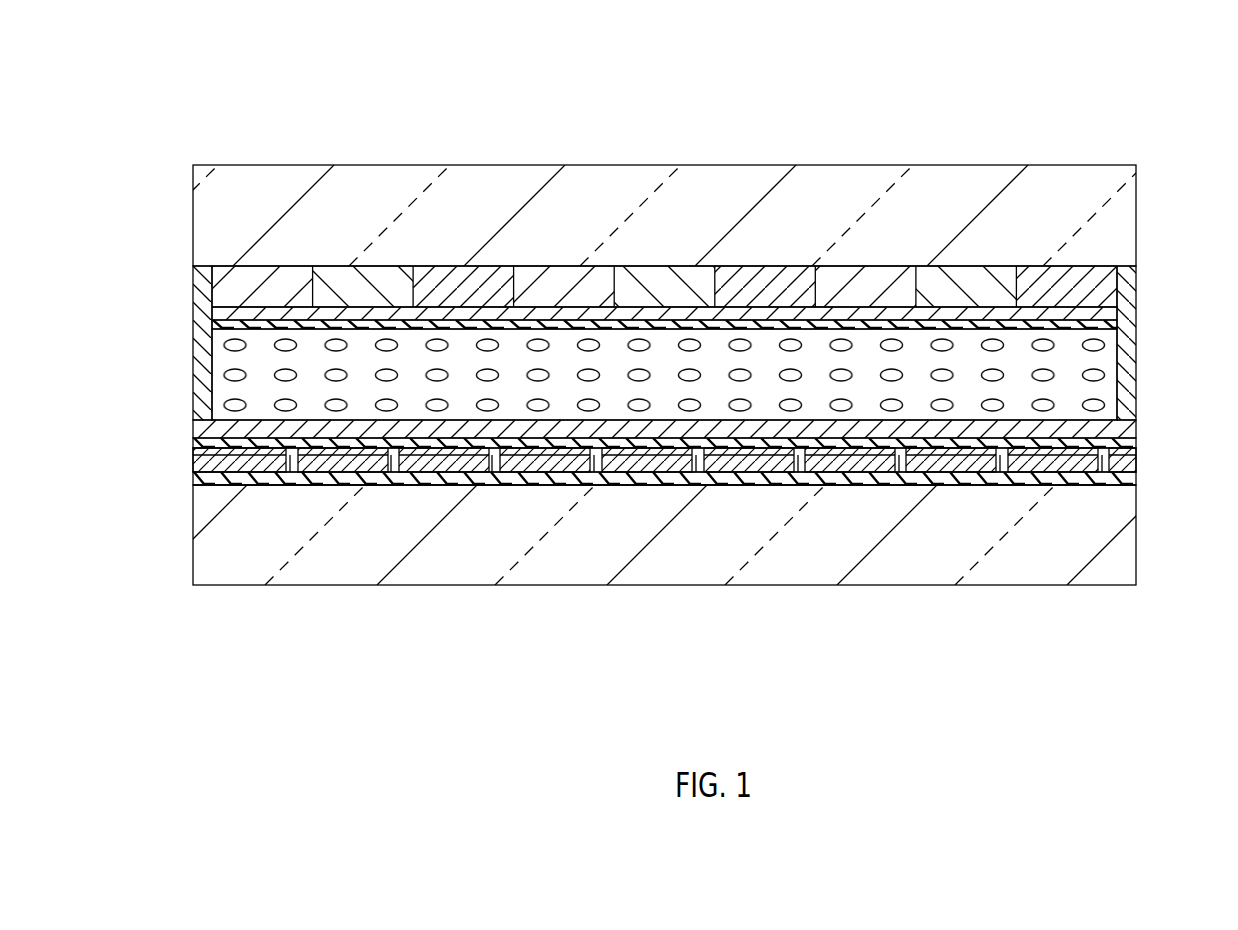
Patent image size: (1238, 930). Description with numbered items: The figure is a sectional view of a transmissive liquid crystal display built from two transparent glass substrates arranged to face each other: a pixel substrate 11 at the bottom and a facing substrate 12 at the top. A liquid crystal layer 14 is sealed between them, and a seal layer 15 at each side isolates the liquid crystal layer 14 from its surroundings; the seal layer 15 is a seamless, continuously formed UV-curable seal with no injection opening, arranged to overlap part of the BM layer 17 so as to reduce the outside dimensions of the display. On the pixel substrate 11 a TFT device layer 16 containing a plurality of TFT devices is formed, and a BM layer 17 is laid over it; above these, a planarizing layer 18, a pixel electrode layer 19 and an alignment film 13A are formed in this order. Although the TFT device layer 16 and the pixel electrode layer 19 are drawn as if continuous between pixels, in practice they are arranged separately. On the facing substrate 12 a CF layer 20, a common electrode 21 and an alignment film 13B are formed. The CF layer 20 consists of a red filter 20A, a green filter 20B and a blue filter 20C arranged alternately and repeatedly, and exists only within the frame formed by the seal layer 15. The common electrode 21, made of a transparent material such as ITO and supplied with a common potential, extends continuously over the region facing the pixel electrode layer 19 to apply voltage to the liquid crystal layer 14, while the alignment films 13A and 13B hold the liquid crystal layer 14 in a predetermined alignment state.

The pixel substrate 11 is at (1128, 555).
The facing substrate 12 is at (1128, 212).
The alignment film 13A is at (1130, 423).
The alignment film 13B is at (1112, 323).
The liquid crystal layer 14 is at (1090, 375).
The seal layer 15 is at (1125, 357).
The TFT device layer 16 is at (1136, 515).
The BM layer 17 is at (1100, 478).
The planarizing layer 18 is at (1125, 460).
The pixel electrode layer 19 is at (1136, 440).
The CF layer 20 is at (664, 175).
The red filter 20A is at (262, 287).
The green filter 20B is at (364, 287).
The blue filter 20C is at (765, 200).
The common electrode 21 is at (1140, 308).